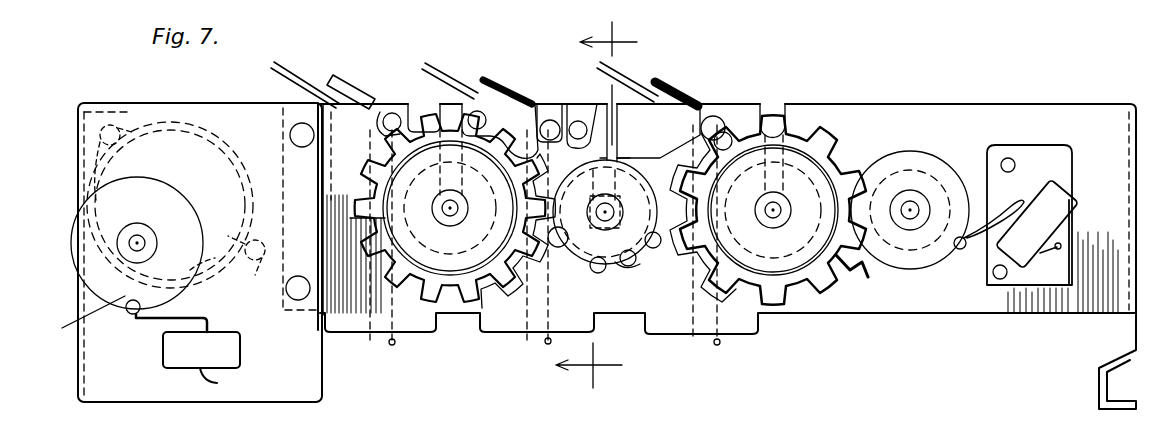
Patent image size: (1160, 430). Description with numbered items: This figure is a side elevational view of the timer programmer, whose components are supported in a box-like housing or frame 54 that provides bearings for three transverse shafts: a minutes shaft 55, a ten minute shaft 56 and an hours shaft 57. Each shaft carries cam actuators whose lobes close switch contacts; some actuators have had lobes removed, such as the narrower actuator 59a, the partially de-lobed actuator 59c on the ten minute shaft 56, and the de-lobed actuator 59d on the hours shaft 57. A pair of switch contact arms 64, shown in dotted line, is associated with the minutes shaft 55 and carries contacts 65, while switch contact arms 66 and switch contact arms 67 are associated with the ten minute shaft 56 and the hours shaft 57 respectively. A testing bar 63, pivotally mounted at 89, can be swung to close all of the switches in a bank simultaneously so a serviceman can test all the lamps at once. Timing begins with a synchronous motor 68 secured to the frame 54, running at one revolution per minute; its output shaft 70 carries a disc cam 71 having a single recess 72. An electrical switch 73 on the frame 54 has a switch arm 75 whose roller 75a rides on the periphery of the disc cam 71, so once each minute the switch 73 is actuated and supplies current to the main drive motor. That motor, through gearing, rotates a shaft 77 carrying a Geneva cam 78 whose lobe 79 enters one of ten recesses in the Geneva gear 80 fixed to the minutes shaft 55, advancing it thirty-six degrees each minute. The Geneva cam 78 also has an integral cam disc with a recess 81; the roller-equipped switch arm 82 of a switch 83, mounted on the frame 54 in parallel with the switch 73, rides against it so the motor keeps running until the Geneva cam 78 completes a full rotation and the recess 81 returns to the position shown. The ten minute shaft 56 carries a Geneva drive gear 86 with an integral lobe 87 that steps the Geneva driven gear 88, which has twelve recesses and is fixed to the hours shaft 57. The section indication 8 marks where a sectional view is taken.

The frame 54 is at (1090, 98).
The minutes shaft 55 is at (785, 202).
The ten minute shaft 56 is at (612, 208).
The hours shaft 57 is at (438, 292).
The narrower actuator 59a is at (815, 314).
The partially de-lobed actuator 59c is at (682, 130).
The de-lobed actuator 59d is at (420, 332).
The testing bar 63 is at (660, 80).
The switch contact arms 64 is at (722, 334).
The contacts 65 is at (712, 114).
The switch contact arms 66 is at (593, 326).
The switch contact arms 67 is at (392, 338).
The synchronous motor 68 is at (228, 152).
The output shaft 70 is at (166, 217).
The disc cam 71 is at (149, 178).
The recess 72 is at (77, 320).
The electrical switch 73 is at (225, 331).
The switch arm 75 is at (138, 324).
The roller 75a is at (190, 275).
The shaft 77 is at (913, 207).
The Geneva cam 78 is at (912, 152).
The lobe 79 is at (987, 182).
The Geneva gear 80 is at (858, 268).
The recess 81 is at (955, 250).
The switch arm 82 is at (995, 210).
The switch 83 is at (1074, 205).
The Geneva drive gear 86 is at (637, 247).
The lobe 87 is at (559, 248).
The Geneva driven gear 88 is at (440, 96).
The pivot 89 is at (726, 128).
The section line 8 is at (581, 205).